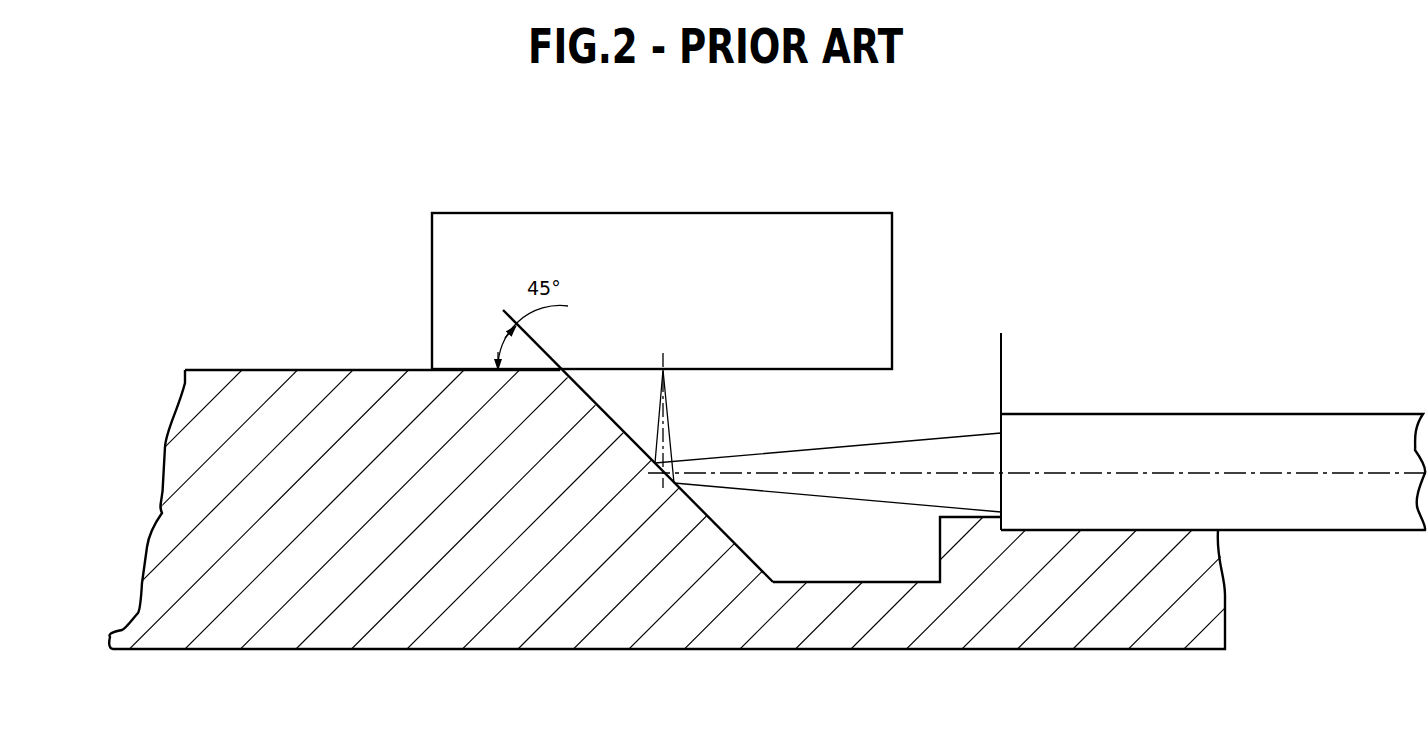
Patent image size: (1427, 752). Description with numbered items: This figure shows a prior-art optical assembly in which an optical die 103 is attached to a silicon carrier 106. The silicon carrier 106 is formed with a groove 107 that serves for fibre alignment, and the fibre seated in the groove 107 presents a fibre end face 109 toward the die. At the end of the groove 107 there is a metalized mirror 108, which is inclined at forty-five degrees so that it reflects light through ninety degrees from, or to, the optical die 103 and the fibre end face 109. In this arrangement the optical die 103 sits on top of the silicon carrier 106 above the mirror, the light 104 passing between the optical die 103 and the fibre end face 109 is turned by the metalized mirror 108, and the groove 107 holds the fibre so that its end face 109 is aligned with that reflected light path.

The optical die 103 is at (783, 257).
The laser beam 104 is at (885, 458).
The silicon carrier 106 is at (293, 407).
The groove 107 is at (1173, 530).
The metalized mirror 108 is at (731, 533).
The fibre end face 109 is at (1002, 352).